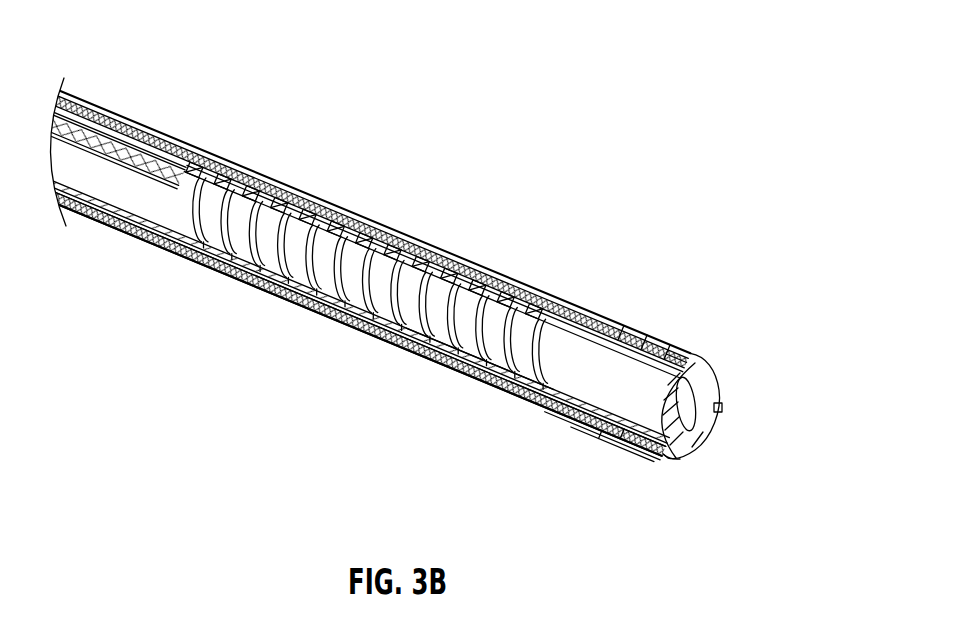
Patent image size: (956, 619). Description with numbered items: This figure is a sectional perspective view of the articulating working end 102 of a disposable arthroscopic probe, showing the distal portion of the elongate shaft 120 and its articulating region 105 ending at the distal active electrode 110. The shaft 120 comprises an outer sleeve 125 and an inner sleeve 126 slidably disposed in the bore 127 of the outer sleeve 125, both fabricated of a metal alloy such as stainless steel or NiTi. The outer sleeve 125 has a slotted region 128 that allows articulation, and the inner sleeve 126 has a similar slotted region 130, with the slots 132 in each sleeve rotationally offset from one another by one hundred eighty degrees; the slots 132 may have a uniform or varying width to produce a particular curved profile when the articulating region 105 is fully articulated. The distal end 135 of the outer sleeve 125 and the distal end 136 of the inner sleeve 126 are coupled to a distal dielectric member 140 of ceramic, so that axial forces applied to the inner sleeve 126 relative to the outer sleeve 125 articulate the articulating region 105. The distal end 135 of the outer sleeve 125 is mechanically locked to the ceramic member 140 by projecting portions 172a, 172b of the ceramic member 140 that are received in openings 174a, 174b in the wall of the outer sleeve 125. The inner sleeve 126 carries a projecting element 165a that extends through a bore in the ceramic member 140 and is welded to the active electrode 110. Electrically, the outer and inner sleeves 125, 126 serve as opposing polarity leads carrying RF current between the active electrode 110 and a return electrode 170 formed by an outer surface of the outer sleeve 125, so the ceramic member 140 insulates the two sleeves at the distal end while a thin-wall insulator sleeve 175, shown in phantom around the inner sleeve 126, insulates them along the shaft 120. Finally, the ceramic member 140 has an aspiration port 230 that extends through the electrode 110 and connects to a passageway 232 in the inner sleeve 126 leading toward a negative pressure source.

The working end 102 is at (667, 172).
The articulating region 105 is at (621, 292).
The active electrode 110 is at (721, 396).
The elongate shaft 120 is at (106, 40).
The outer sleeve 125 is at (162, 242).
The inner sleeve 126 is at (120, 213).
The bore 127 is at (303, 297).
The slotted region 128 is at (212, 160).
The slotted region 130 is at (375, 321).
The slots 132 is at (493, 348).
The distal end of outer sleeve 135 is at (633, 331).
The distal end of inner sleeve 136 is at (667, 458).
The distal dielectric member 140 is at (707, 367).
The projecting element 165a is at (723, 412).
The return electrode 170 is at (133, 122).
The projecting portion 172a is at (603, 318).
The projecting portion 172b is at (566, 418).
The opening 174a is at (617, 320).
The opening 174b is at (584, 428).
The insulator sleeve 175 is at (238, 281).
The aspiration port 230 is at (701, 428).
The passageway 232 is at (638, 425).